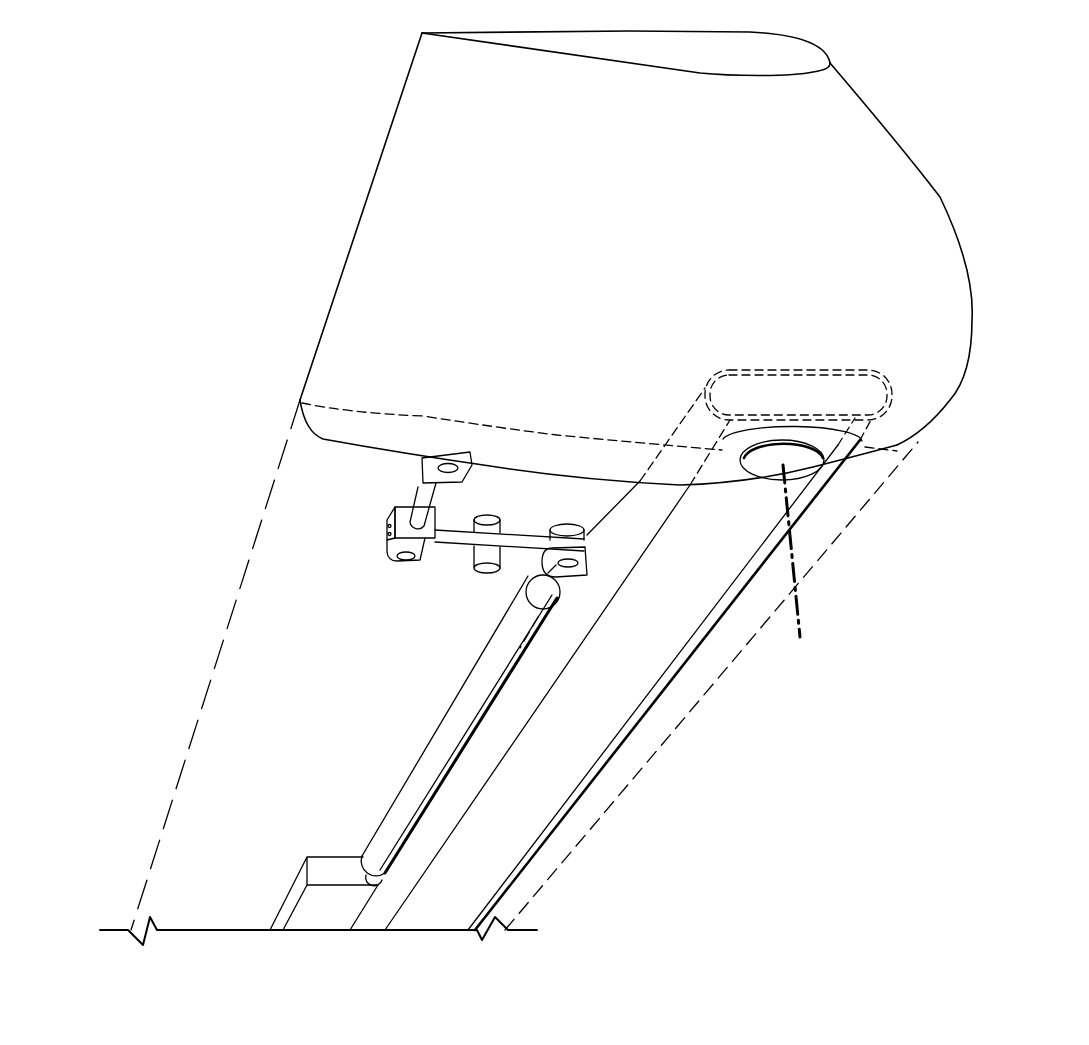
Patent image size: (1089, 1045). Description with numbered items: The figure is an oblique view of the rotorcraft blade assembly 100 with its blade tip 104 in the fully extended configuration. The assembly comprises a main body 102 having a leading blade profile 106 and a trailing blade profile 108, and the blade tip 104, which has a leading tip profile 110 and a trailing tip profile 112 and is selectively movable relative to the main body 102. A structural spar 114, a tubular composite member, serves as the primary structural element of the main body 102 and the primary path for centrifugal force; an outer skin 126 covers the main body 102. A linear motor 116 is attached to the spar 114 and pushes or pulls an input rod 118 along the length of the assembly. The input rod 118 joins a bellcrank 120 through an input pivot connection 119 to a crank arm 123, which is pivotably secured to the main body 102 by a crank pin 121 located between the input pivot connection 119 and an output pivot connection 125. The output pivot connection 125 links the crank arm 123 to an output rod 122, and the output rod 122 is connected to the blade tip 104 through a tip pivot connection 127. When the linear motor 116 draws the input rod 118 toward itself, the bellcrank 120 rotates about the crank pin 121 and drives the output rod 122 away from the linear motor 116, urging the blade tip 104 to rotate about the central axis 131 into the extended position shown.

The rotorcraft blade assembly 100 is at (203, 425).
The main body 102 is at (695, 730).
The blade tip 104 is at (942, 193).
The leading blade profile 106 is at (748, 652).
The trailing blade profile 108 is at (210, 665).
The leading tip profile 110 is at (975, 284).
The trailing tip profile 112 is at (360, 232).
The structural spar 114 is at (563, 777).
The linear motor 116 is at (289, 893).
The input rod 118 is at (450, 714).
The input pivot connection 119 is at (584, 518).
The bellcrank 120 is at (445, 563).
The crank pin 121 is at (488, 518).
The output rod 122 is at (413, 498).
The crank arm 123 is at (522, 530).
The output pivot connection 125 is at (395, 572).
The outer skin 126 is at (243, 580).
The tip pivot connection 127 is at (432, 447).
The central axis 131 is at (800, 615).